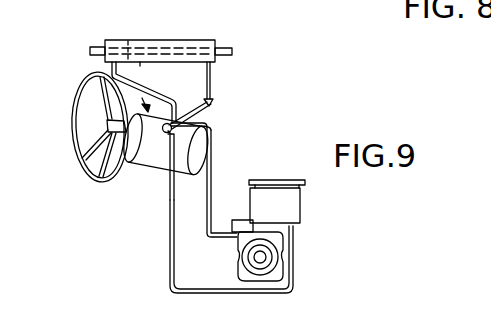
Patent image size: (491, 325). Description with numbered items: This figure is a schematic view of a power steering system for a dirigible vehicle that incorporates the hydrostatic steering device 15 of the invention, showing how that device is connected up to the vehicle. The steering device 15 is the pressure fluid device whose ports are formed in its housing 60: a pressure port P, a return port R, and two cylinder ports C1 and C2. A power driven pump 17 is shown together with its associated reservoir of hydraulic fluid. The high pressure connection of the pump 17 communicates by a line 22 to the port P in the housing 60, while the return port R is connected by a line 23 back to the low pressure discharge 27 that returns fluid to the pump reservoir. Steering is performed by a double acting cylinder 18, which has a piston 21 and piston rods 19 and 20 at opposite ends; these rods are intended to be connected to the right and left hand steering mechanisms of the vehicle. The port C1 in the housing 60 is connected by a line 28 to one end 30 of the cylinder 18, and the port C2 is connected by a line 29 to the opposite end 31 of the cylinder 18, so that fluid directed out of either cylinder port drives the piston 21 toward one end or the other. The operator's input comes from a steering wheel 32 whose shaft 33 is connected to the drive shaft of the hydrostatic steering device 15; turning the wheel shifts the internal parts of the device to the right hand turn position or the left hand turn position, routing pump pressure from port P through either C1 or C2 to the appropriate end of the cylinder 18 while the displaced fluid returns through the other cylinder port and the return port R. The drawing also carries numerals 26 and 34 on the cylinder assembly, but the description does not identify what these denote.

The hydrostatic steering device 15 is at (159, 90).
The power driven pump 17 is at (237, 259).
The double acting cylinder 18 is at (166, 39).
The piston rod 19 is at (95, 46).
The piston rod 20 is at (223, 48).
The piston 21 is at (128, 40).
The line 22 is at (212, 208).
The line 23 is at (170, 226).
The cylinder conduit 26 is at (197, 177).
The low pressure discharge 27 is at (299, 223).
The line 28 is at (144, 102).
The line 29 is at (213, 118).
The end of the cylinder 30 is at (110, 61).
The end of the cylinder 31 is at (216, 66).
The steering wheel 32 is at (71, 128).
The shaft 33 is at (103, 179).
The hydraulic cylinder 34 is at (134, 150).
The housing 60 is at (149, 183).
The port C1 is at (176, 122).
The port C2 is at (163, 160).
The pressure port P is at (208, 97).
The return port R is at (210, 139).